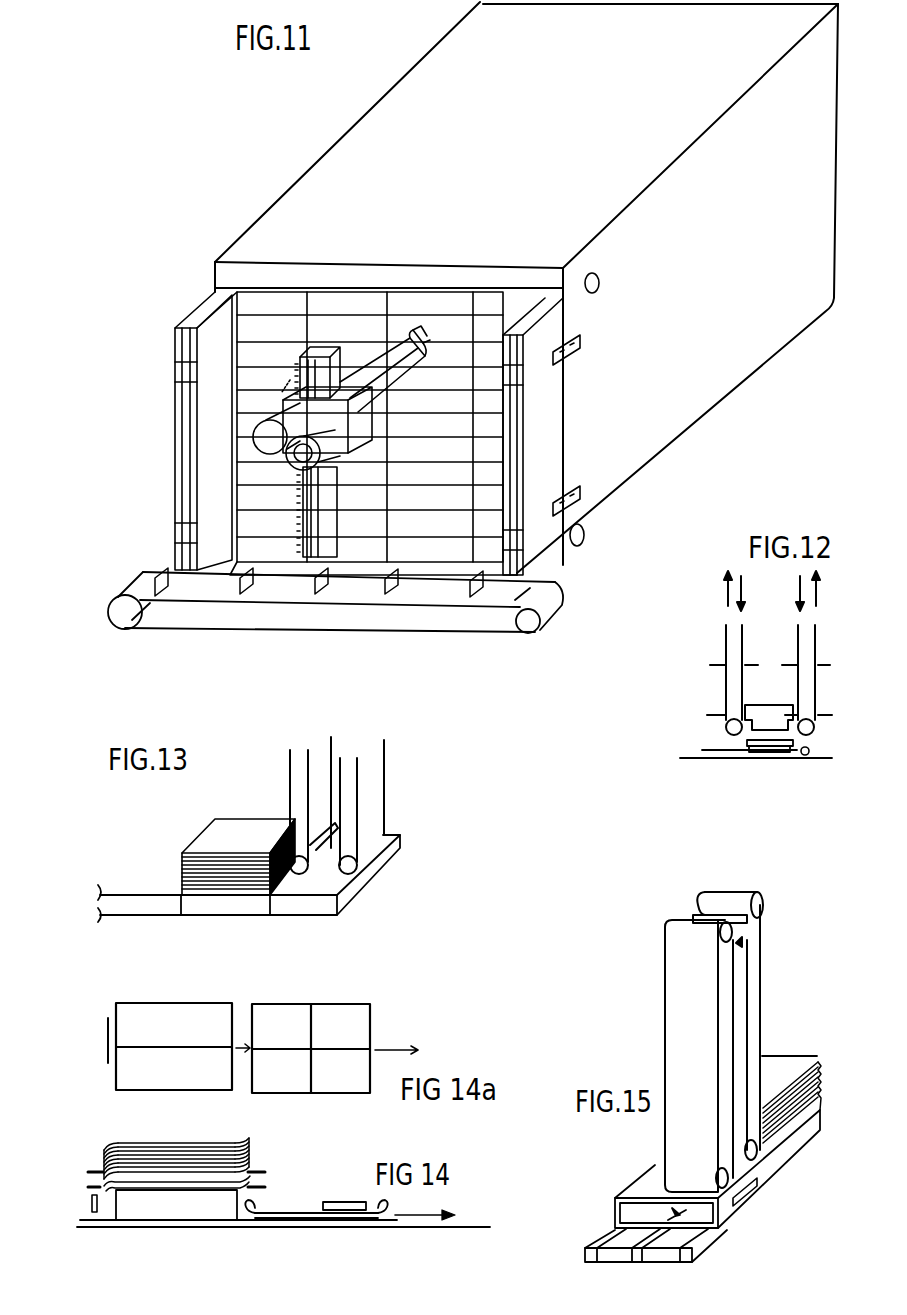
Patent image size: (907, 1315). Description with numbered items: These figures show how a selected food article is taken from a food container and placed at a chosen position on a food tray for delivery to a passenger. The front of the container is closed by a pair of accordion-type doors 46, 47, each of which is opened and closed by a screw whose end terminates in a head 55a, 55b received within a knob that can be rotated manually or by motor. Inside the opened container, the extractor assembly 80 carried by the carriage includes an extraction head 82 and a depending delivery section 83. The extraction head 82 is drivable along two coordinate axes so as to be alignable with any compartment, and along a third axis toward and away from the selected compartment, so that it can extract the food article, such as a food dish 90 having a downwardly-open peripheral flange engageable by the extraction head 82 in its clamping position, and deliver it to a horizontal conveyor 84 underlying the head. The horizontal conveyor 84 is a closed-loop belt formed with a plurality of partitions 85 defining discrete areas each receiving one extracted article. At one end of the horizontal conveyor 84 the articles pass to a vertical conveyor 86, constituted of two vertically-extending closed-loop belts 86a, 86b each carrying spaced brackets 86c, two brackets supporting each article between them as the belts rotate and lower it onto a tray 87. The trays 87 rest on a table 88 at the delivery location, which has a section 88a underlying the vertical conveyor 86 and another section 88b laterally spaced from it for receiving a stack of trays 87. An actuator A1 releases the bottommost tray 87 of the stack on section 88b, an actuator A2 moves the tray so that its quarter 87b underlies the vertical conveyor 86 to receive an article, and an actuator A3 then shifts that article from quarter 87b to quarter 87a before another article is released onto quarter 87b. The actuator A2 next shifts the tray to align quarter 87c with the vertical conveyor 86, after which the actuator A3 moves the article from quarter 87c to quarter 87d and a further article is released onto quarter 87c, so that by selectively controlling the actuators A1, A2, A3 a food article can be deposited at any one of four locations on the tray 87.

In FIG. 11, the accordion-type door 46 is at (187, 450).
In FIG. 11, the accordion-type door 47 is at (548, 472).
In FIG. 11, the screw head 55a is at (598, 288).
In FIG. 11, the screw head 55b is at (582, 542).
In FIG. 11, the extractor assembly 80 is at (132, 572).
In FIG. 11, the extraction head 82 is at (410, 342).
In FIG. 15, the delivery section 83 is at (665, 980).
In FIG. 11, the horizontal conveyor 84 is at (338, 608).
In FIG. 11, the partition 85 is at (165, 595).
In FIG. 15, the vertical conveyor 86 is at (730, 880).
In FIG. 15, the closed-loop belt 86a is at (695, 1013).
In FIG. 13, the closed-loop belt 86b is at (370, 810).
In FIG. 15, the closed-loop belt 86b is at (755, 978).
In FIG. 12, the bracket 86c is at (792, 665).
In FIG. 13, the bracket 86c is at (305, 835).
In FIG. 12, the tray 87 is at (705, 750).
In FIG. 13, the tray 87 is at (217, 840).
In FIG. 14, the tray 87 is at (112, 1141).
In FIG. 15, the tray 87 is at (776, 1068).
In FIG. 14a, the tray quarter 87a is at (343, 1078).
In FIG. 14a, the tray quarter 87b is at (343, 1034).
In FIG. 14a, the tray quarter 87c is at (282, 1034).
In FIG. 14a, the tray quarter 87d is at (283, 1078).
In FIG. 14, the table 88 is at (250, 1220).
In FIG. 13, the table section 88a is at (287, 905).
In FIG. 14, the table section 88a is at (350, 1225).
In FIG. 15, the table section 88a is at (725, 1226).
In FIG. 13, the table section 88b is at (218, 903).
In FIG. 14, the table section 88b is at (190, 1215).
In FIG. 15, the table section 88b is at (782, 1165).
In FIG. 12, the food dish 90 is at (771, 746).
In FIG. 14, the actuator A1 is at (88, 1187).
In FIG. 14a, the actuator A2 is at (108, 1030).
In FIG. 14, the actuator A2 is at (92, 1205).
In FIG. 12, the actuator A3 is at (809, 751).
In FIG. 14a, the actuator A3 is at (340, 1003).
In FIG. 14, the actuator A3 is at (336, 1203).
In FIG. 15, the actuator A3 is at (746, 1200).